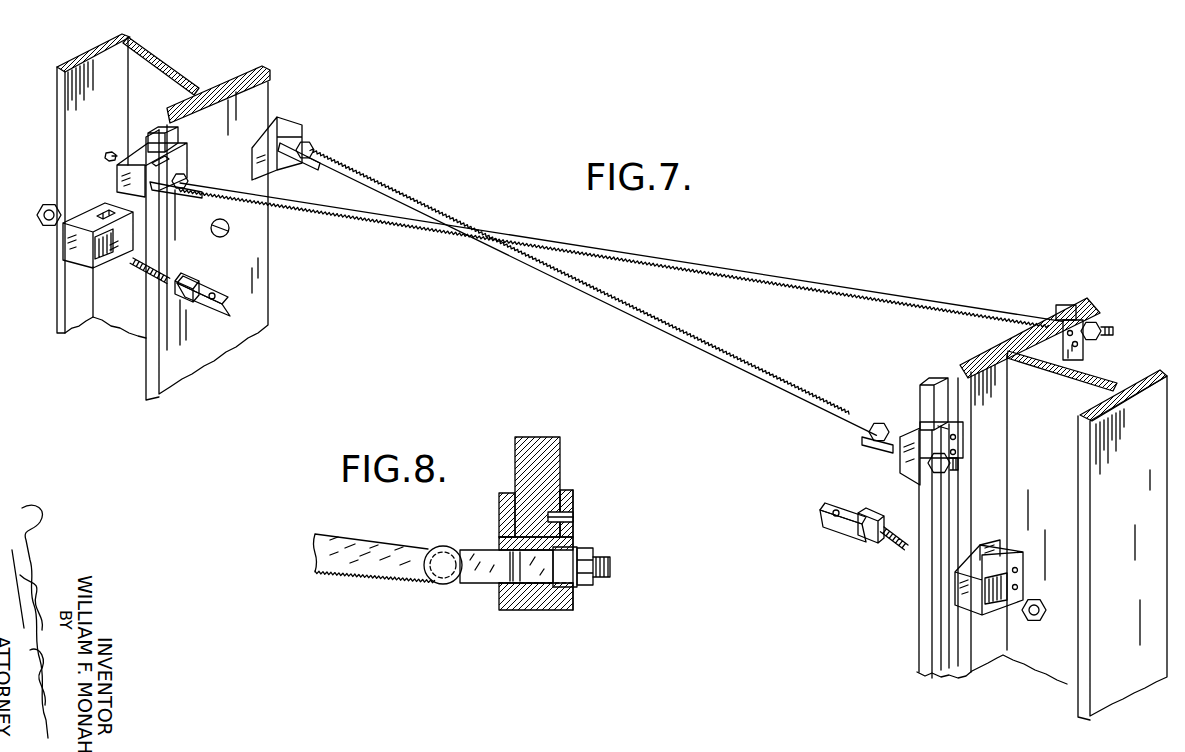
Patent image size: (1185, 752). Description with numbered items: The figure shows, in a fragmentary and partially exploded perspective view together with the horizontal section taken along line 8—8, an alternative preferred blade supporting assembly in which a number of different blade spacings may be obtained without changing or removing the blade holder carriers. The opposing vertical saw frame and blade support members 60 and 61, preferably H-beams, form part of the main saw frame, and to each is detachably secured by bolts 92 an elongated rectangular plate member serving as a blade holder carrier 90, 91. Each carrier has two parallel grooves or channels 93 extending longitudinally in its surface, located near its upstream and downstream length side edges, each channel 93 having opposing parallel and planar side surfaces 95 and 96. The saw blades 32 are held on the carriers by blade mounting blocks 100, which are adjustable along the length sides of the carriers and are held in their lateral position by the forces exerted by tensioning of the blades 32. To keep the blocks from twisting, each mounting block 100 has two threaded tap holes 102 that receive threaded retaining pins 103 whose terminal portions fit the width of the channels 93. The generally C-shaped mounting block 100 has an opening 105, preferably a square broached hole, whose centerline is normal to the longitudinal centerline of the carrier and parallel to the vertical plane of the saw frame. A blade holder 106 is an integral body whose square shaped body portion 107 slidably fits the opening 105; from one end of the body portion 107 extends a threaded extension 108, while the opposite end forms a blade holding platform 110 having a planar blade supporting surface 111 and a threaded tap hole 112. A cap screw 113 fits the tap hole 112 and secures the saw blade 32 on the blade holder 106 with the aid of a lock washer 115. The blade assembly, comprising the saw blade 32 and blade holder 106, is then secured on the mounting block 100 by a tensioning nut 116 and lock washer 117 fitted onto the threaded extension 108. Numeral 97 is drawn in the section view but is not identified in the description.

In FIG. 7, the section line 8— 8 is at (864, 419).
In FIG. 7, the saw blade 32 is at (650, 277).
In FIG. 8, the saw blade 32 is at (363, 576).
In FIG. 7, the vertical saw frame and blade support member 60 is at (1105, 383).
In FIG. 7, the vertical saw frame and blade support member 61 is at (157, 86).
In FIG. 7, the blade holder carrier 90 is at (970, 353).
In FIG. 8, the blade holder carrier 90 is at (540, 436).
In FIG. 7, the blade holder carrier 91 is at (267, 259).
In FIG. 7, the bolt 92 is at (228, 227).
In FIG. 7, the groove or channel 93 is at (252, 70).
In FIG. 8, the groove or channel 93 is at (543, 515).
In FIG. 8, the side surface 95 is at (501, 540).
In FIG. 8, the side surface 96 is at (557, 485).
In FIG. 8, the shoulder 97 is at (500, 528).
In FIG. 7, the blade mounting block 100 is at (293, 116).
In FIG. 8, the blade mounting block 100 is at (542, 614).
In FIG. 7, the threaded tap hole 102 is at (947, 430).
In FIG. 8, the threaded tap hole 102 is at (553, 517).
In FIG. 7, the retaining pin 103 is at (100, 212).
In FIG. 8, the retaining pin 103 is at (570, 517).
In FIG. 7, the opening 105 is at (115, 248).
In FIG. 8, the opening 105 is at (530, 583).
In FIG. 7, the blade holder 106 is at (322, 152).
In FIG. 7, the square shaped body portion 107 is at (187, 278).
In FIG. 8, the square shaped body portion 107 is at (542, 556).
In FIG. 7, the threaded extension 108 is at (143, 268).
In FIG. 8, the threaded extension 108 is at (612, 565).
In FIG. 7, the blade holding platform 110 is at (197, 300).
In FIG. 7, the planar blade supporting surface 111 is at (208, 290).
In FIG. 8, the planar blade supporting surface 111 is at (482, 583).
In FIG. 7, the threaded tap hole 112 is at (215, 300).
In FIG. 7, the cap screw 113 is at (865, 447).
In FIG. 8, the cap screw 113 is at (444, 548).
In FIG. 8, the lock washer 115 is at (446, 585).
In FIG. 7, the tensioning nut 116 is at (932, 472).
In FIG. 7, the lock washer 117 is at (925, 440).